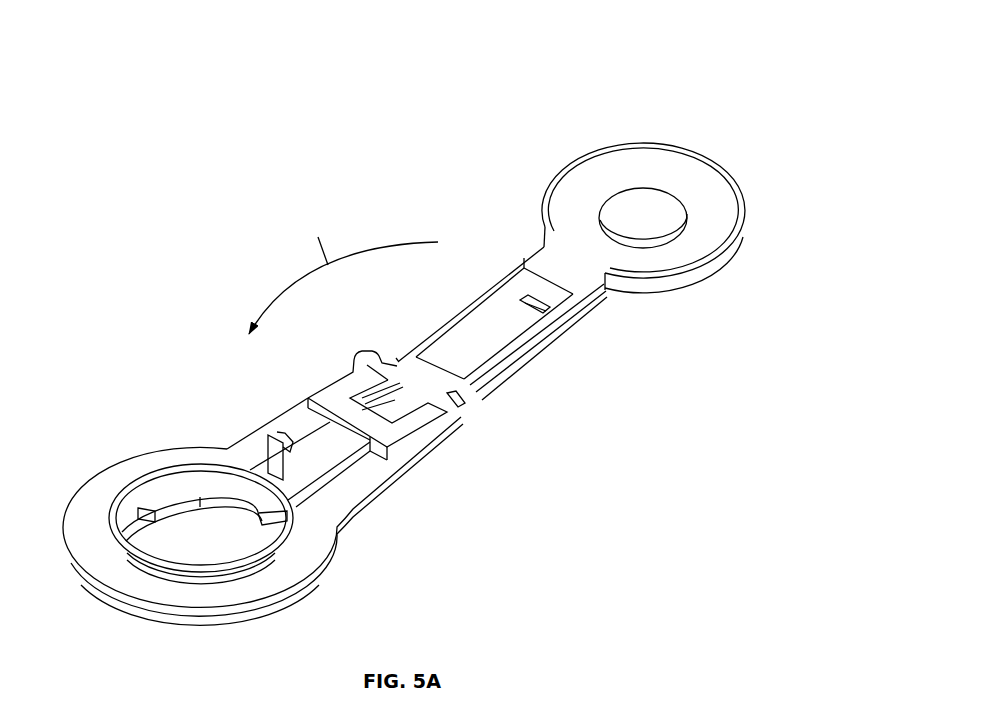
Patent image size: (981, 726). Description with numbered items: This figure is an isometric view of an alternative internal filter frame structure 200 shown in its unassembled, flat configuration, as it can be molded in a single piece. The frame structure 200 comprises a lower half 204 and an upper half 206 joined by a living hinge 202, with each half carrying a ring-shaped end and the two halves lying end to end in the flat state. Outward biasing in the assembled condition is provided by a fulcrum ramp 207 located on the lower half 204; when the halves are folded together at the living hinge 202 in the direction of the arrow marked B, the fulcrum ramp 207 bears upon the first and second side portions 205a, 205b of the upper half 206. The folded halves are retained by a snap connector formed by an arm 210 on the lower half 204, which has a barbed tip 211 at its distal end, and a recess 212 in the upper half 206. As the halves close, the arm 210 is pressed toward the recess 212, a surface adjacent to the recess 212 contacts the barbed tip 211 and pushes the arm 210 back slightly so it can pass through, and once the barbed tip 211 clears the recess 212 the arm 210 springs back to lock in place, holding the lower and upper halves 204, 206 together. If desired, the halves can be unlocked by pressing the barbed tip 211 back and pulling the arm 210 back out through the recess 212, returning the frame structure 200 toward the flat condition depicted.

The frame structure 200 is at (152, 128).
The living hinge 202 is at (428, 382).
The lower half 204 is at (93, 470).
The first side portion 205a is at (533, 330).
The second side portion 205b is at (447, 315).
The upper half 206 is at (580, 160).
The fulcrum ramp 207 is at (387, 428).
The arm 210 is at (271, 453).
The barbed tip 211 is at (279, 432).
The recess 212 is at (530, 298).